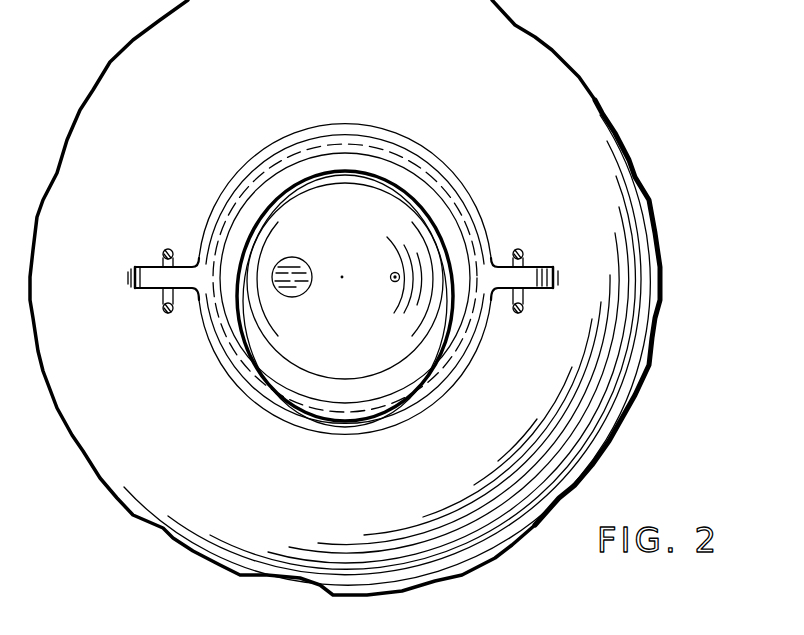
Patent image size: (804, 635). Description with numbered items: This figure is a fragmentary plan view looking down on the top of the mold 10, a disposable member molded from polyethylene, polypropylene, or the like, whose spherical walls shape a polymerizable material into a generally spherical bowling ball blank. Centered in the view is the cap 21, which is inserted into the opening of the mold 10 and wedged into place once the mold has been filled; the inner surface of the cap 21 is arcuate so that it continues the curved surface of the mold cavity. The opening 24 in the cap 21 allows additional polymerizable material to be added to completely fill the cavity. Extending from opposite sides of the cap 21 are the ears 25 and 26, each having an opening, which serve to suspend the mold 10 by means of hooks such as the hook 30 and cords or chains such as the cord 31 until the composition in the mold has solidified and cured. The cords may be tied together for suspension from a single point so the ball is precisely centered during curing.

The mold 10 is at (583, 78).
The cap 21 is at (360, 320).
The opening 24 is at (302, 268).
The ear 25 is at (147, 270).
The ear 26 is at (538, 268).
The hook 30 is at (523, 300).
The cord or chain 31 is at (163, 306).